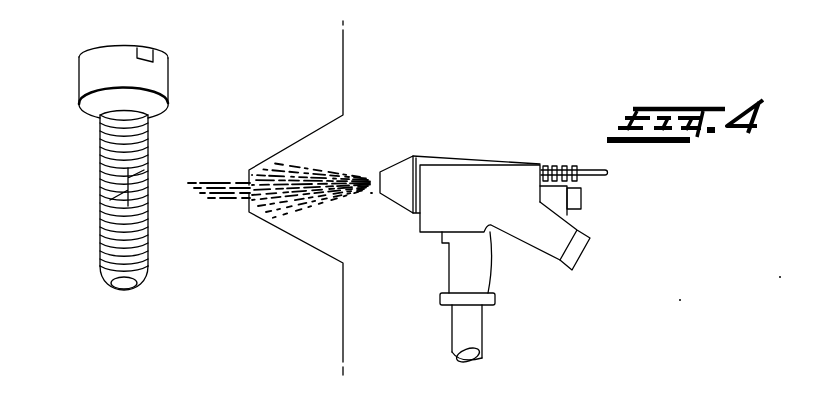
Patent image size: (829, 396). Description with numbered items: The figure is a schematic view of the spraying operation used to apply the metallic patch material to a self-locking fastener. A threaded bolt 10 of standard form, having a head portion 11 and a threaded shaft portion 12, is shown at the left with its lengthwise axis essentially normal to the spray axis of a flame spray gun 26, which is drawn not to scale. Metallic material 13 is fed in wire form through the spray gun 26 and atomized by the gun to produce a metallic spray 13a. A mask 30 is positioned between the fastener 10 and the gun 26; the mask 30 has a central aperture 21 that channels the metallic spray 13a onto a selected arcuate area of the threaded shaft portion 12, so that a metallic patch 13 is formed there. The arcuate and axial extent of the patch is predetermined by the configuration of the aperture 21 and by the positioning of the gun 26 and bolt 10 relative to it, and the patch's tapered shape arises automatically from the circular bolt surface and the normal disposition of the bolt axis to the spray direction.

The threaded bolt 10 is at (180, 138).
The head portion 11 is at (92, 66).
The threaded shaft portion 12 is at (110, 147).
The metallic patch 13 is at (128, 193).
The metallic spray 13a is at (330, 180).
The central aperture 21 is at (246, 200).
The flame spray gun 26 is at (478, 163).
The mask 30 is at (343, 62).